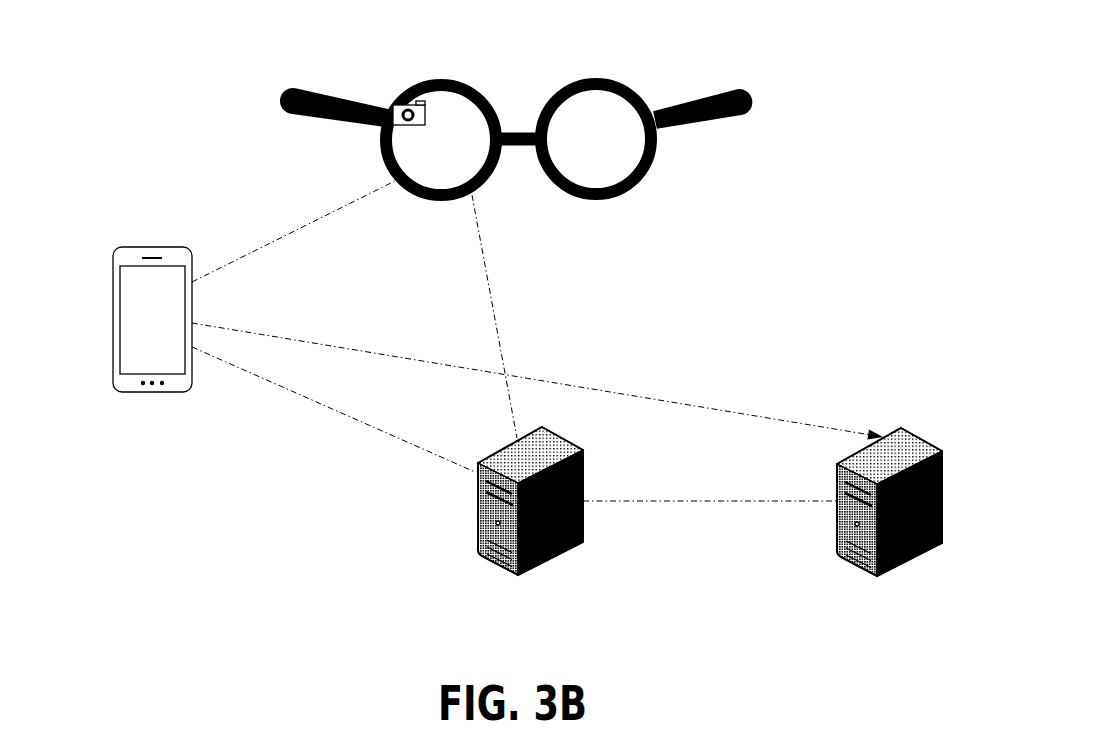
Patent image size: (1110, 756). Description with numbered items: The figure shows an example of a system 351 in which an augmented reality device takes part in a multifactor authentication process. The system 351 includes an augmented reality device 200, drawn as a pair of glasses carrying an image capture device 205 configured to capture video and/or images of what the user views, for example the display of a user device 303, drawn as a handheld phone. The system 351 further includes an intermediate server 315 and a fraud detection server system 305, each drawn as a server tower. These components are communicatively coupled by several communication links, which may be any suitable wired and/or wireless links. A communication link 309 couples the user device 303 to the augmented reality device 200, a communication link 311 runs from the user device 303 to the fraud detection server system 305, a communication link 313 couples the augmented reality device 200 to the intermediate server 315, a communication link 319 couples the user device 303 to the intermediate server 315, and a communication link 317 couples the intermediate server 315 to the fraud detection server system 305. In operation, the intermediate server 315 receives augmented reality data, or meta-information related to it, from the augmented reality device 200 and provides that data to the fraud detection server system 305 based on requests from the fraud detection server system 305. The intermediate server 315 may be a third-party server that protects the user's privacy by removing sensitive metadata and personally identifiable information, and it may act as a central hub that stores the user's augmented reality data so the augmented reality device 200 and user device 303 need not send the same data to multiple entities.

The augmented reality device 200 is at (647, 175).
The image capture device 205 is at (390, 104).
The user device 303 is at (140, 247).
The fraud detection server system 305 is at (897, 422).
The communication link 309 is at (255, 252).
The communication link 311 is at (383, 353).
The communication link 313 is at (492, 298).
The intermediate server 315 is at (582, 543).
The communication link 317 is at (737, 501).
The communication link 319 is at (360, 421).
The system 351 is at (210, 560).